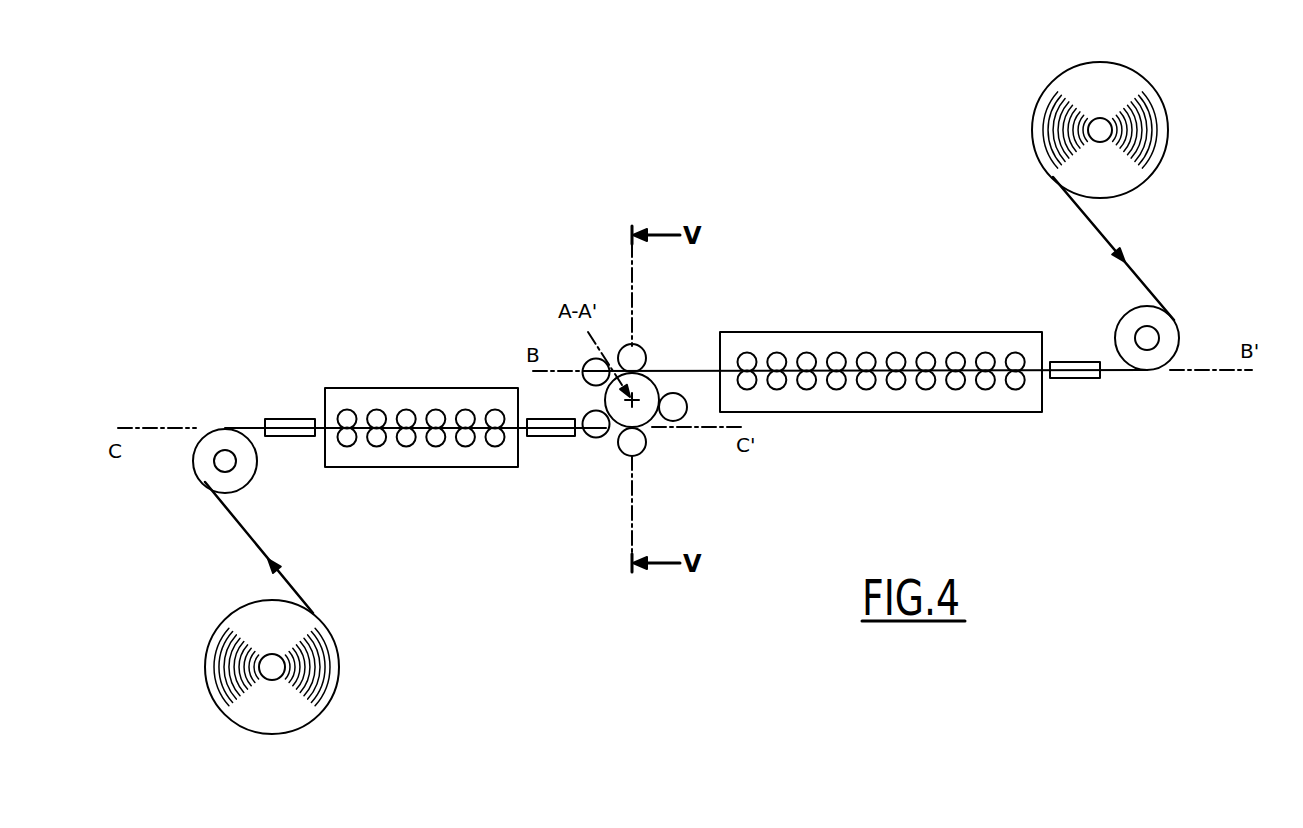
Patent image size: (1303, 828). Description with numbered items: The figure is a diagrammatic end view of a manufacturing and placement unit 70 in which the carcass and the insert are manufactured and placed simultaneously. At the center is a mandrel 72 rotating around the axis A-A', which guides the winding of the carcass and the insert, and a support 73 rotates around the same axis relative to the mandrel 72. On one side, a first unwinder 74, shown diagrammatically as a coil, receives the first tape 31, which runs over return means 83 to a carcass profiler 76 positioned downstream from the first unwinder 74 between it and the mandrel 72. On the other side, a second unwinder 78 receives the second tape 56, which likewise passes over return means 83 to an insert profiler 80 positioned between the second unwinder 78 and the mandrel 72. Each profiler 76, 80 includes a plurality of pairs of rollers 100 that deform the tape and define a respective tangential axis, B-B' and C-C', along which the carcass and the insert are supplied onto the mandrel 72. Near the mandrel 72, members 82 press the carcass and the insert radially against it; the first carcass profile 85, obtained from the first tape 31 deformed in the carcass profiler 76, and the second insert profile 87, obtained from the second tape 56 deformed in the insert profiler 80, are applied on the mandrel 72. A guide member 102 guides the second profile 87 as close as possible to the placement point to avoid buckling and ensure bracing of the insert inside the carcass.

The manufacturing and placement unit 70 is at (1200, 82).
The first unwinder 74 is at (1045, 130).
The first tape 31 is at (1138, 268).
The return means 83 is at (1178, 318).
The support 73 is at (881, 329).
The carcass profiler 76 is at (905, 332).
The pairs of rollers 100 is at (1020, 363).
The insert profiler 80 is at (423, 388).
The guide member 102 is at (548, 438).
The mandrel 72 is at (642, 418).
The members for radial pressing 82 is at (628, 344).
The first carcass profile 85 is at (688, 369).
The second insert profile 87 is at (606, 432).
The second tape 56 is at (232, 525).
The second unwinder 78 is at (210, 667).